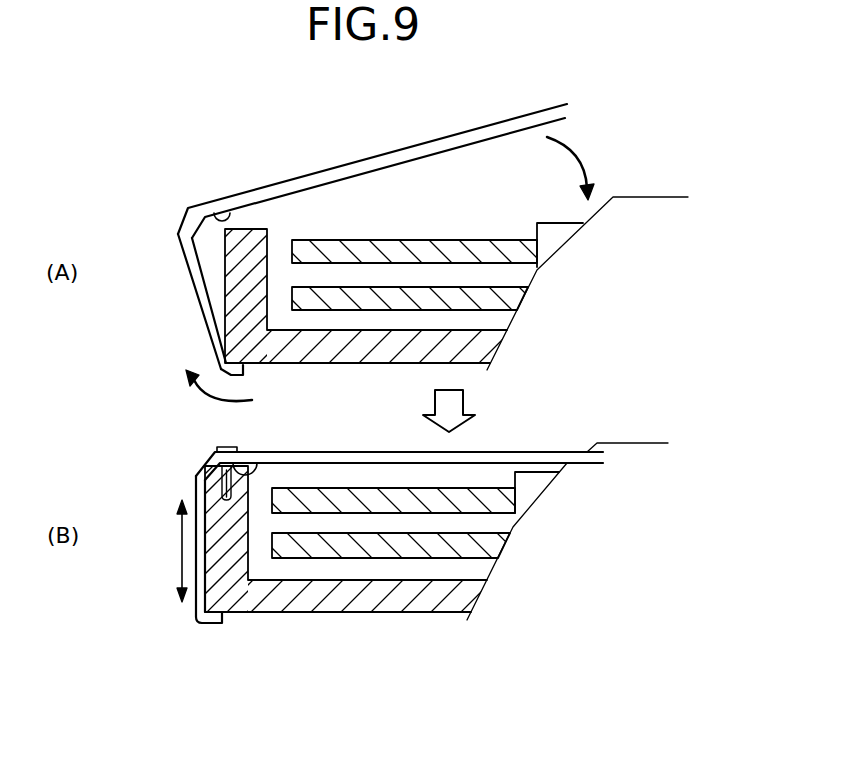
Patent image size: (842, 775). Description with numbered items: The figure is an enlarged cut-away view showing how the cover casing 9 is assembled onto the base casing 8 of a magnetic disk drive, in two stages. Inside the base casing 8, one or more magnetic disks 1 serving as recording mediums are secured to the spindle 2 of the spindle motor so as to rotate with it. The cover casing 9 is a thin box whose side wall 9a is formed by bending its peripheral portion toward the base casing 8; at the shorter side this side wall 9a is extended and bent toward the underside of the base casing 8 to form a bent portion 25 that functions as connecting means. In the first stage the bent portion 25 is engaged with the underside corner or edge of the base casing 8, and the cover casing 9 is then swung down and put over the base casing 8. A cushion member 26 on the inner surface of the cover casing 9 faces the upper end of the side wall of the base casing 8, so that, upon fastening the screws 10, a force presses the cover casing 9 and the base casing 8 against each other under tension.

The magnetic disk 1 is at (420, 255).
The spindle 2 is at (551, 223).
The base casing 8 is at (377, 365).
The cover casing 9 is at (345, 163).
The side wall 9a is at (188, 282).
The screw 10 is at (230, 446).
The bent portion 25 is at (245, 377).
The cushion member 26 is at (229, 214).